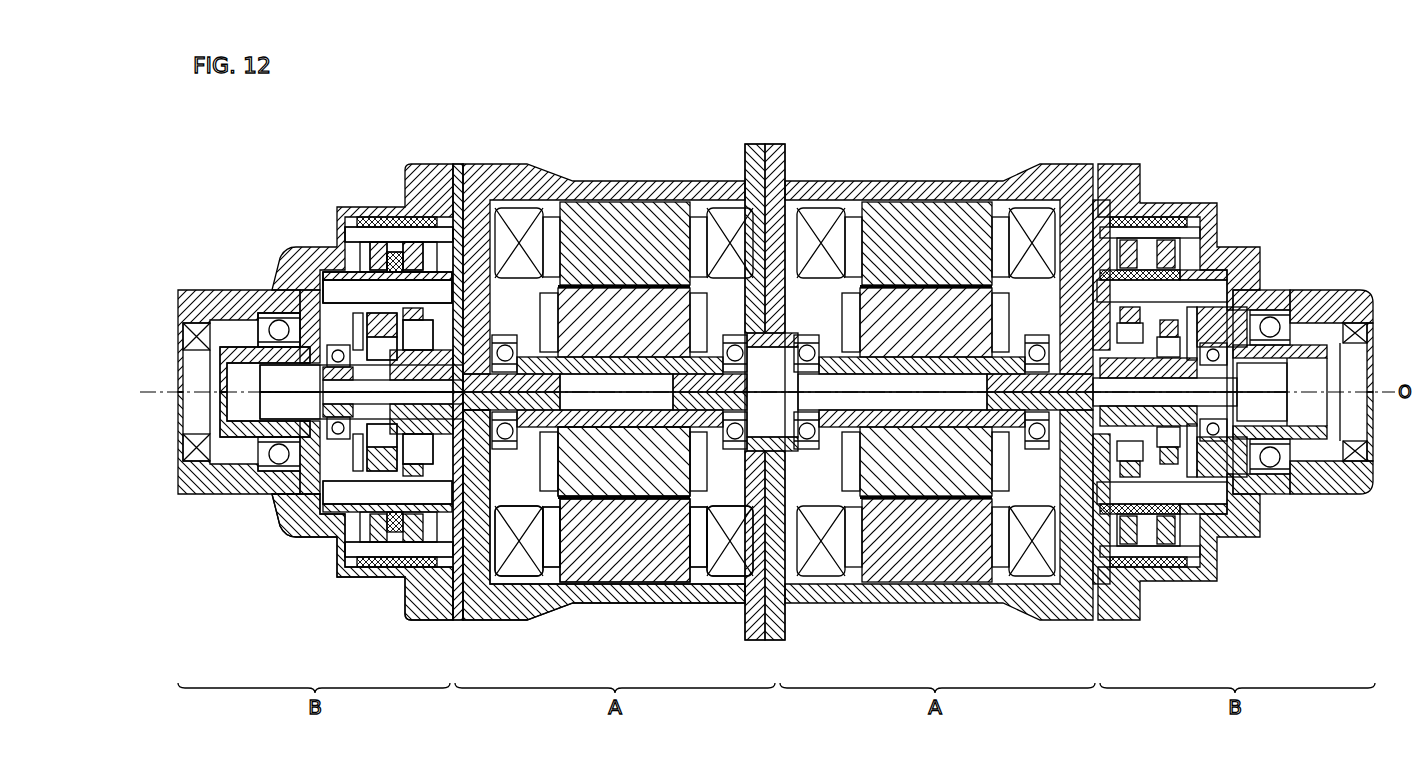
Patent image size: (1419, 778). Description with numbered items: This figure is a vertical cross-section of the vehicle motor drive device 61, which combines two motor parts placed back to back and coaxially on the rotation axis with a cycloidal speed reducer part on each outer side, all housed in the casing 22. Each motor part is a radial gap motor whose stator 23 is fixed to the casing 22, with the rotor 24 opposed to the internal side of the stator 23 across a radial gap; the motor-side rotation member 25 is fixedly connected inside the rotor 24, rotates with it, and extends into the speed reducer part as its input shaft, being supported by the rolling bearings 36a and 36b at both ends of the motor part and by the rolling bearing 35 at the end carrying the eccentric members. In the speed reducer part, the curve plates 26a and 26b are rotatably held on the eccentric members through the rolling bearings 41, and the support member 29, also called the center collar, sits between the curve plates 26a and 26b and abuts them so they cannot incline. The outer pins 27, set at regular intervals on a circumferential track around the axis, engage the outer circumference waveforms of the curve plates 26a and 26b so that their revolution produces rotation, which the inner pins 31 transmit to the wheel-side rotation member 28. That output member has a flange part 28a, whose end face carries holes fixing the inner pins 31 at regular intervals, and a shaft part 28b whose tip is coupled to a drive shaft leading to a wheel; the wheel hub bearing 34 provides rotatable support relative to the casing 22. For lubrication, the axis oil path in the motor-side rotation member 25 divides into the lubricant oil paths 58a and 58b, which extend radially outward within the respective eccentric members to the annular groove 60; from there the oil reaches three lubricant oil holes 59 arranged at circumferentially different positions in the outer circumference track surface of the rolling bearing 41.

The casing 22 is at (491, 601).
The stator 23 is at (519, 562).
The rotor 24 is at (597, 470).
The motor-side rotation member 25 is at (630, 497).
The curve plate 26a is at (416, 258).
The curve plate 26b is at (383, 252).
The outer pin 27 is at (352, 236).
The wheel-side rotation member 28 is at (333, 298).
The flange part 28a is at (333, 277).
The shaft part 28b is at (220, 357).
The support member 29 is at (391, 250).
The inner pin 31 is at (327, 293).
The wheel hub bearing 34 is at (267, 316).
The rolling bearing 35 is at (295, 510).
The rolling bearing 36a is at (712, 508).
The rolling bearing 36b is at (549, 545).
The rolling bearing 41 is at (461, 370).
The lubricant oil path 58a is at (362, 407).
The lubricant oil path 58b is at (380, 367).
The lubricant oil hole 59 is at (372, 347).
The annular groove 60 is at (370, 360).
The vehicle motor drive device 61 is at (1195, 110).